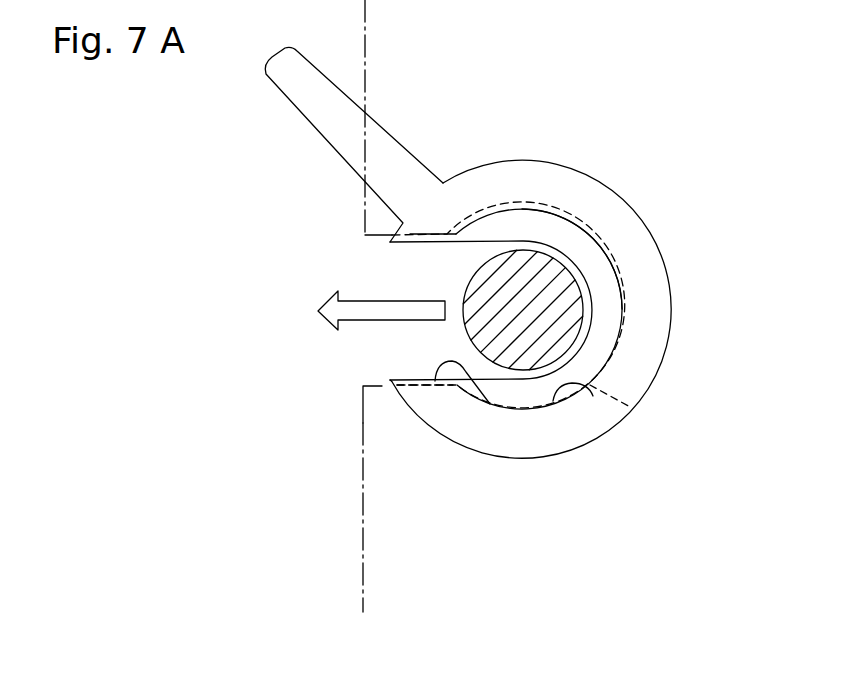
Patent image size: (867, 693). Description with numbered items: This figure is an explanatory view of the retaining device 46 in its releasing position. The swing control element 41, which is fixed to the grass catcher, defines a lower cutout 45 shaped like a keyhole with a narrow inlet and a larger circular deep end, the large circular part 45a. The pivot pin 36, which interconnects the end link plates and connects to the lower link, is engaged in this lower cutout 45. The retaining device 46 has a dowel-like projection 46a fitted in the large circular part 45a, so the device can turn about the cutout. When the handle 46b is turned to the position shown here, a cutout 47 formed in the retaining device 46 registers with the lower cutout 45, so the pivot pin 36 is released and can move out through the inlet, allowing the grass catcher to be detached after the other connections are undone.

The pivot pin 36 is at (472, 285).
The swing control element 41 is at (385, 478).
The lower cutout 45 is at (382, 385).
The large circular part 45a is at (632, 408).
The retaining device 46 is at (456, 280).
The dowel-like projection 46a is at (603, 283).
The handle 46b is at (323, 100).
The cutout 47 is at (493, 406).